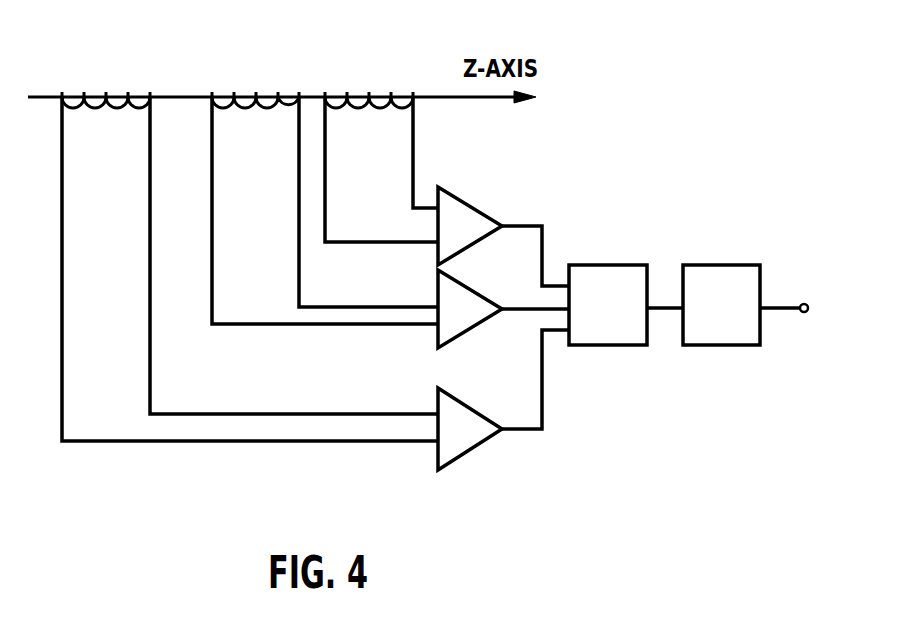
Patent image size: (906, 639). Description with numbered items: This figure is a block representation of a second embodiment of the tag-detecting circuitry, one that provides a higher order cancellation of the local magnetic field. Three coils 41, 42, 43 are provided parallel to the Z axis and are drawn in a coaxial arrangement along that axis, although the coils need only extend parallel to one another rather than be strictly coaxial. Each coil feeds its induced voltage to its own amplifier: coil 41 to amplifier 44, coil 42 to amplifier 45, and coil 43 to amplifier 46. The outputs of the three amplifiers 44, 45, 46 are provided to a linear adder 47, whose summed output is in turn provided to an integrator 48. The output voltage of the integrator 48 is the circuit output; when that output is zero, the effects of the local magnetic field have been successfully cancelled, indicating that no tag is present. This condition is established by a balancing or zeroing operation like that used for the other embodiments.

The coil 41 is at (126, 97).
The coil 42 is at (251, 97).
The coil 43 is at (367, 97).
The amplifier 44 is at (487, 412).
The amplifier 45 is at (478, 293).
The amplifier 46 is at (468, 203).
The linear adder 47 is at (608, 265).
The integrator 48 is at (720, 265).